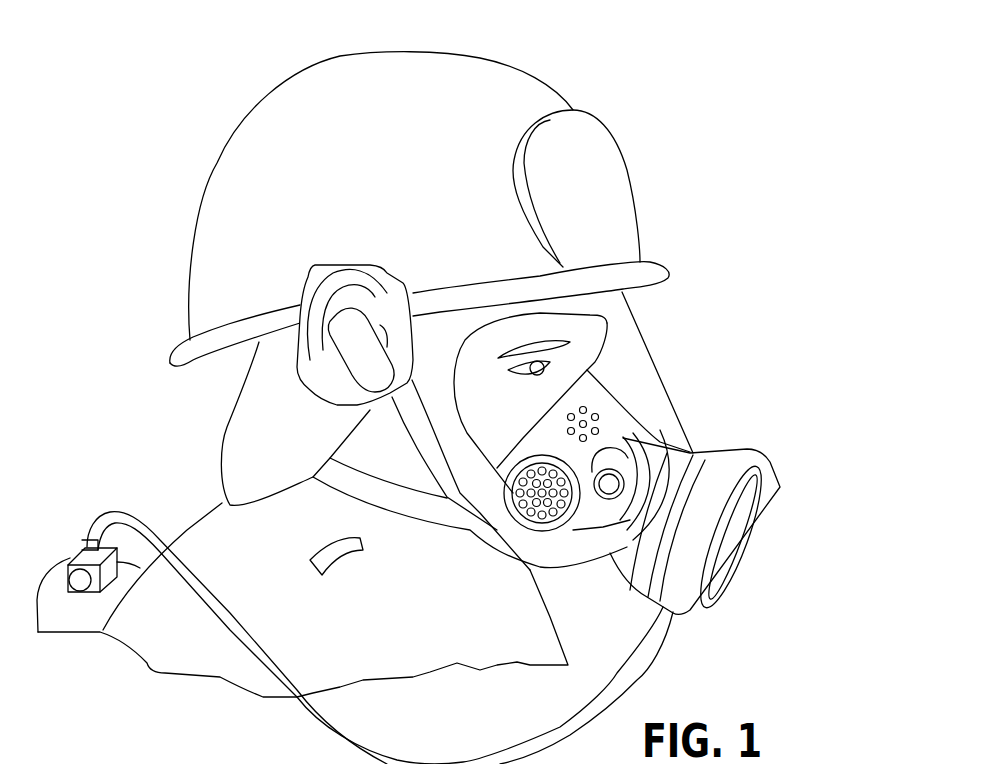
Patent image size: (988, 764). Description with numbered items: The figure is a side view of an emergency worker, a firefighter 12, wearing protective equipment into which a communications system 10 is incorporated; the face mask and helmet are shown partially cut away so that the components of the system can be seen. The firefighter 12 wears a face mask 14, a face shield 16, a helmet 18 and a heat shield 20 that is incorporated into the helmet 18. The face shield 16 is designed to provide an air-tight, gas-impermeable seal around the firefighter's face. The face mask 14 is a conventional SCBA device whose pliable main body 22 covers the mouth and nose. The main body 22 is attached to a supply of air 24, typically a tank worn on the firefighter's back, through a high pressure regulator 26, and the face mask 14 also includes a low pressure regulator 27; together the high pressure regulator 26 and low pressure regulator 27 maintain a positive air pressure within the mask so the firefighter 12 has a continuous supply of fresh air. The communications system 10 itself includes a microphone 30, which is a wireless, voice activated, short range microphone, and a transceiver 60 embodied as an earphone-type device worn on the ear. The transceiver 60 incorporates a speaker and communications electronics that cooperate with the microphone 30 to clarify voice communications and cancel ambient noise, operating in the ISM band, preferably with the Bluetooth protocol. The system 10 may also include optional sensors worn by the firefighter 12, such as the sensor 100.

The communications system 10 is at (767, 303).
The firefighter 12 is at (210, 527).
The face mask 14 is at (735, 524).
The face shield 16 is at (645, 338).
The helmet 18 is at (545, 97).
The heat shield 20 is at (242, 427).
The main body 22 is at (610, 397).
The supply of air 24 is at (50, 590).
The high pressure regulator 26 is at (103, 573).
The low pressure regulator 27 is at (677, 570).
The microphone 30 is at (657, 437).
The transceiver 60 is at (363, 330).
The sensor 100 is at (310, 573).